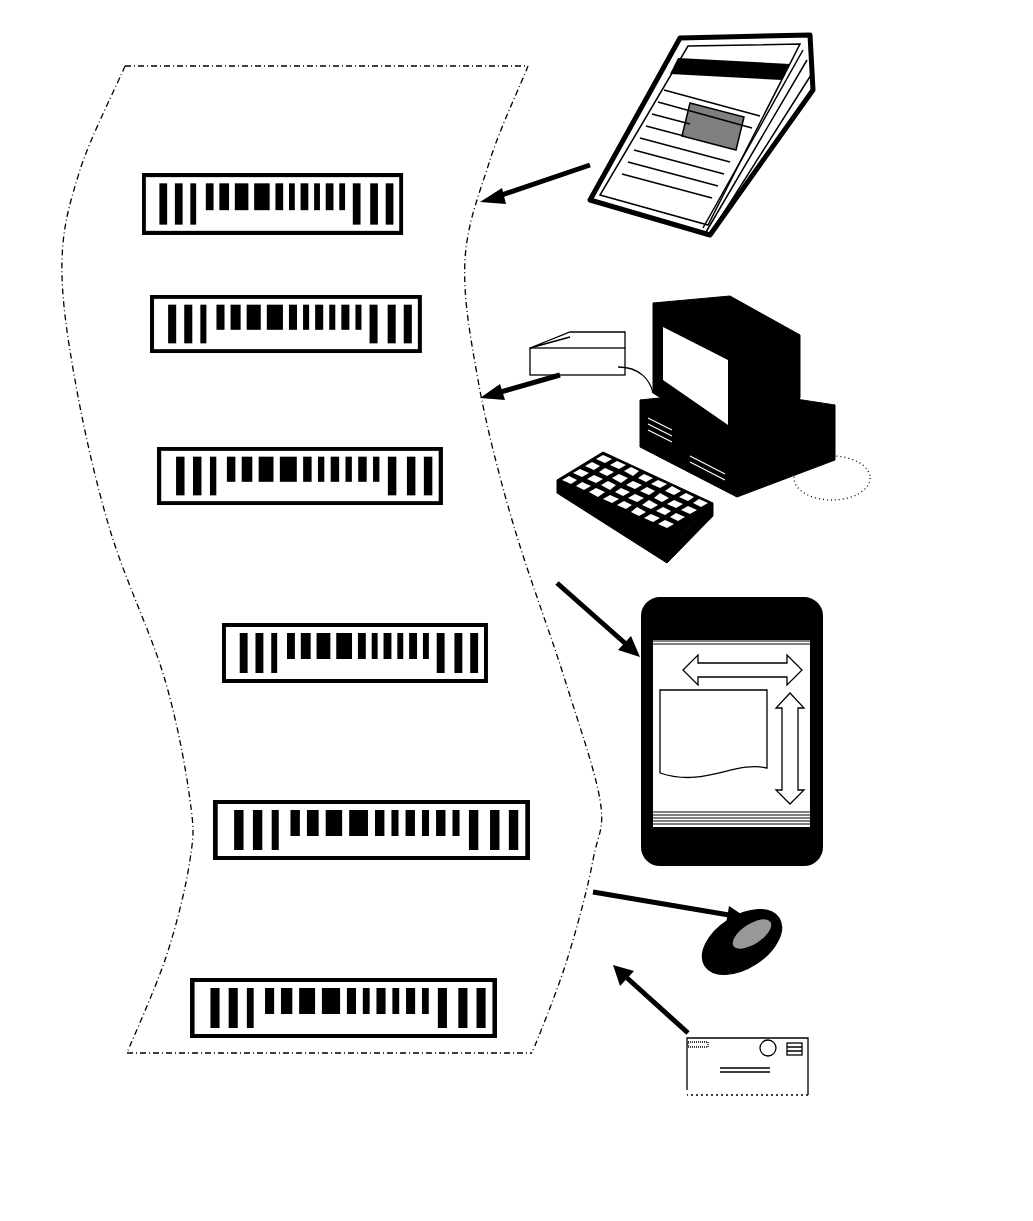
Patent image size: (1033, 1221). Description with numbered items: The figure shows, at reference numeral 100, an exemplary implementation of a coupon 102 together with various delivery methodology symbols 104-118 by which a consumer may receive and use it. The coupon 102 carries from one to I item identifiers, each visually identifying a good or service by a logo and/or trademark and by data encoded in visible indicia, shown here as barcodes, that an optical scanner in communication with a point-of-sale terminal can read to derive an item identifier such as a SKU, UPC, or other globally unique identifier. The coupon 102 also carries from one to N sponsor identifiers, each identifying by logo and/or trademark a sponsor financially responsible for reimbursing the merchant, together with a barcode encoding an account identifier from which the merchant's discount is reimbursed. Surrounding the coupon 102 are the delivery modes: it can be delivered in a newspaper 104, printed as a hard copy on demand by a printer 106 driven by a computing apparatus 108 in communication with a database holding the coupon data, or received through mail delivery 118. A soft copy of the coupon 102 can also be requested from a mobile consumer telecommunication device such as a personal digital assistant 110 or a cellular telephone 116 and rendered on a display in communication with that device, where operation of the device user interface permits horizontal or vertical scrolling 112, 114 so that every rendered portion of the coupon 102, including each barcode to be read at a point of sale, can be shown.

The coupon and delivery mode implementation 100 is at (127, 44).
The coupon 102 is at (328, 42).
The newspaper 104 is at (660, 78).
The printer 106 is at (535, 343).
The computing apparatus 108 is at (683, 302).
The Personal Digital Assistant (PDA) 110 is at (723, 596).
The horizontal scrolling 112 is at (712, 662).
The vertical scrolling 114 is at (788, 730).
The cellular telephone 116 is at (723, 933).
The mail delivery 118 is at (687, 1057).